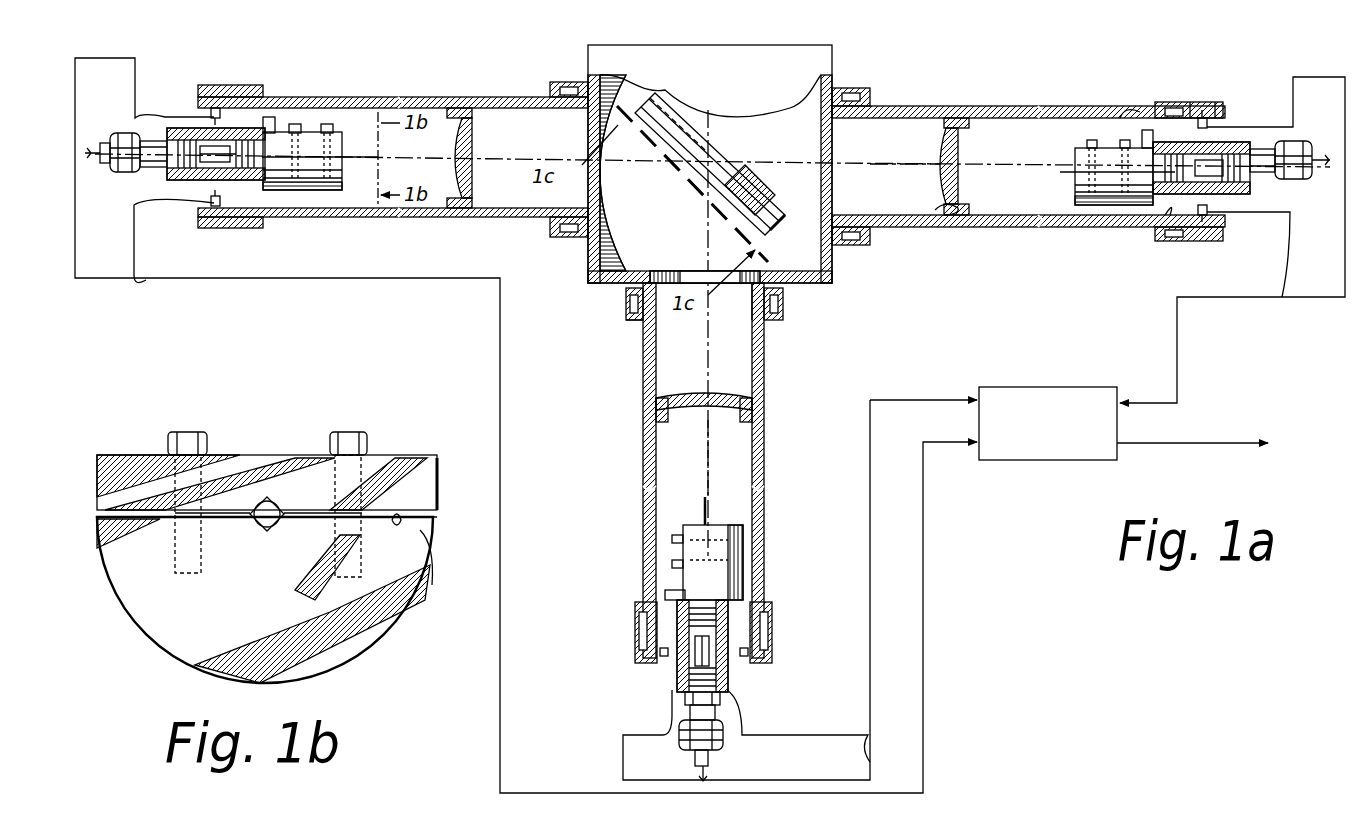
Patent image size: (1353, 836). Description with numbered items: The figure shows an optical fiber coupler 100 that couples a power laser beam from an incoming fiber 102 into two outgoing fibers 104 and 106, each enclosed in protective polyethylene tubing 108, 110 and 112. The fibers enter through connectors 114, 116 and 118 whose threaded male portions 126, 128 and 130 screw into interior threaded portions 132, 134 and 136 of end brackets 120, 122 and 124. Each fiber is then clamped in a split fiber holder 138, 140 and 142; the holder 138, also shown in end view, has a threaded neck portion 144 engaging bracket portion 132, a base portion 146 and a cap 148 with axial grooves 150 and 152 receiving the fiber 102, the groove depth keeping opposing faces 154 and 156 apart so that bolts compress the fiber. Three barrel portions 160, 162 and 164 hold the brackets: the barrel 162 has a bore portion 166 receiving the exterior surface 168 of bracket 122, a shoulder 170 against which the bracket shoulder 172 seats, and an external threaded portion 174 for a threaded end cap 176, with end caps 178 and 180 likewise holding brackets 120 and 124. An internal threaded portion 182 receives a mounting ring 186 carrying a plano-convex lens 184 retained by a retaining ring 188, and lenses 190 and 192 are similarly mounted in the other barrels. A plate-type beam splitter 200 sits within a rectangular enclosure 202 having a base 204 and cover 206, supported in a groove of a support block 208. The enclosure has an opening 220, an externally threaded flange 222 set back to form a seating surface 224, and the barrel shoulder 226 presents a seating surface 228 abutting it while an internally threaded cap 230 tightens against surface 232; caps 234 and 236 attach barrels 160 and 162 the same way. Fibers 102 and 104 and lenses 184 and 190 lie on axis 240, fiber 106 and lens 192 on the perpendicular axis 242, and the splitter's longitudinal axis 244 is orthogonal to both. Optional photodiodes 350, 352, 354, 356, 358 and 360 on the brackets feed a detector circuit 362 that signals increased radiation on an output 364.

In FIG. 1a, the optical fiber coupler 100 is at (712, 357).
In FIG. 1a, the incoming fiber 102 is at (102, 150).
In FIG. 1b, the incoming fiber 102 is at (280, 510).
In FIG. 1a, the outgoing fiber 104 is at (1065, 106).
In FIG. 1a, the outgoing fiber 106 is at (700, 510).
In FIG. 1a, the protective polyethylene tubing 108 is at (128, 133).
In FIG. 1a, the protective polyethylene tubing 110 is at (1300, 141).
In FIG. 1a, the protective polyethylene tubing 112 is at (708, 757).
In FIG. 1a, the connector 114 is at (145, 172).
In FIG. 1a, the connector 116 is at (1262, 149).
In FIG. 1a, the connector 118 is at (720, 700).
In FIG. 1a, the end bracket 120 is at (190, 128).
In FIG. 1a, the end bracket 122 is at (1222, 142).
In FIG. 1a, the end bracket 124 is at (677, 665).
In FIG. 1a, the threaded male portion 126 is at (205, 170).
In FIG. 1a, the threaded male portion 128 is at (1215, 180).
In FIG. 1a, the threaded male portion 130 is at (722, 678).
In FIG. 1a, the interior threaded portion 132 is at (218, 158).
In FIG. 1a, the interior threaded portion 134 is at (1168, 215).
In FIG. 1a, the interior threaded portion 136 is at (712, 655).
In FIG. 1a, the split fiber holder 138 is at (355, 128).
In FIG. 1b, the split fiber holder 138 is at (368, 420).
In FIG. 1a, the split fiber holder 140 is at (1080, 205).
In FIG. 1a, the split fiber holder 142 is at (745, 525).
In FIG. 1a, the neck portion 144 is at (280, 190).
In FIG. 1a, the base portion 146 is at (330, 190).
In FIG. 1b, the base portion 146 is at (385, 640).
In FIG. 1a, the cap 148 is at (300, 125).
In FIG. 1b, the cap 148 is at (160, 455).
In FIG. 1b, the axial groove 150 is at (245, 540).
In FIG. 1b, the axial groove 152 is at (258, 500).
In FIG. 1b, the opposing face 154 is at (432, 580).
In FIG. 1b, the opposing face 156 is at (400, 510).
In FIG. 1a, the barrel portion 160 is at (420, 97).
In FIG. 1a, the barrel portion 162 is at (1005, 106).
In FIG. 1a, the barrel portion 164 is at (764, 470).
In FIG. 1a, the smooth cylindrical bore portion 166 is at (1190, 102).
In FIG. 1a, the smooth exterior cylindrical surface 168 is at (1215, 102).
In FIG. 1a, the shoulder 170 is at (1120, 205).
In FIG. 1a, the shoulder 172 is at (1135, 112).
In FIG. 1a, the external threaded portion 174 is at (1168, 102).
In FIG. 1a, the threaded end cap 176 is at (1212, 241).
In FIG. 1a, the threaded end cap 178 is at (250, 90).
In FIG. 1a, the threaded end cap 180 is at (772, 620).
In FIG. 1a, the internal threaded portion 182 is at (930, 115).
In FIG. 1a, the plano-convex lens 184 is at (960, 155).
In FIG. 1a, the mounting ring 186 is at (950, 215).
In FIG. 1a, the retaining ring 188 is at (980, 200).
In FIG. 1a, the plano-convex lens 190 is at (472, 140).
In FIG. 1a, the plano-convex lens 192 is at (730, 395).
In FIG. 1a, the beam splitter 200 is at (780, 215).
In FIG. 1a, the rectangular enclosure 202 is at (812, 45).
In FIG. 1a, the base 204 is at (669, 200).
In FIG. 1a, the cover 206 is at (710, 66).
In FIG. 1a, the support block 208 is at (725, 140).
In FIG. 1a, the opening 220 is at (692, 270).
In FIG. 1a, the externally threaded flange 222 is at (630, 295).
In FIG. 1a, the seating surface 224 is at (758, 300).
In FIG. 1a, the shoulder 226 is at (658, 290).
In FIG. 1a, the seating surface 228 is at (615, 220).
In FIG. 1a, the internally threaded cap 230 is at (783, 315).
In FIG. 1a, the surface 232 is at (640, 320).
In FIG. 1a, the threaded cap 234 is at (550, 85).
In FIG. 1a, the threaded cap 236 is at (870, 238).
In FIG. 1a, the axis 240 is at (895, 163).
In FIG. 1a, the axis 242 is at (706, 475).
In FIG. 1a, the longitudinal axis 244 is at (755, 190).
In FIG. 1a, the photodiode 350 is at (218, 108).
In FIG. 1a, the photodiode 352 is at (220, 208).
In FIG. 1a, the photodiode 354 is at (1203, 118).
In FIG. 1a, the photodiode 356 is at (1203, 215).
In FIG. 1a, the photodiode 358 is at (628, 625).
In FIG. 1a, the photodiode 360 is at (748, 652).
In FIG. 1a, the detector circuit 362 is at (1075, 387).
In FIG. 1a, the output 364 is at (1225, 443).